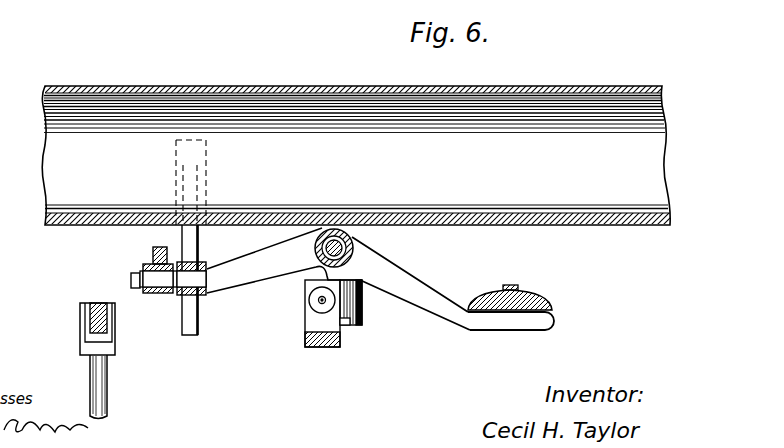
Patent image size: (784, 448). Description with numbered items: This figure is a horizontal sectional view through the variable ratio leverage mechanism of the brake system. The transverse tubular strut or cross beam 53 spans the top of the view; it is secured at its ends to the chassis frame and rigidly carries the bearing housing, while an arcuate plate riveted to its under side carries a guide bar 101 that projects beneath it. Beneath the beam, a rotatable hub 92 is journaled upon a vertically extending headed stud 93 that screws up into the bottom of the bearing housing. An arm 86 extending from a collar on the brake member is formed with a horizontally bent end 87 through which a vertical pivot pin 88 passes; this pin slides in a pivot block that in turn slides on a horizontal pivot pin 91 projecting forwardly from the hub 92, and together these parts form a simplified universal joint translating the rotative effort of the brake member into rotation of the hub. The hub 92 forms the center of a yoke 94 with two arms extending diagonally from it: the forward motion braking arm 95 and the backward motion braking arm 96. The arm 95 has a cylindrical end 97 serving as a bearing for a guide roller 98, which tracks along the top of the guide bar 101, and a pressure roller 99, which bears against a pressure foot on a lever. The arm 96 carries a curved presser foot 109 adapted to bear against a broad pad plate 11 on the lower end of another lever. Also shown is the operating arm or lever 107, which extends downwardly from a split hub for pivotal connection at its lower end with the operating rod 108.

The cam pad 11 is at (556, 311).
The tubular strut or cross beam 53 is at (64, 226).
The arm 86 is at (305, 343).
The horizontally bent end 87 is at (315, 322).
The vertical pivot pin 88 is at (308, 303).
The horizontal pivot pin 91 is at (349, 326).
The rotatable hub 92 is at (354, 248).
The headed stud 93 is at (336, 240).
The yoke 94 is at (277, 245).
The forward motion braking arm 95 is at (244, 274).
The backward motion braking arm 96 is at (410, 296).
The cylindrical end 97 is at (168, 290).
The guide roller 98 is at (199, 296).
The pressure roller 99 is at (150, 292).
The guide bar 101 is at (208, 168).
The operating arm or lever 107 is at (90, 320).
The operating rod 108 is at (92, 378).
The curved presser foot 109 is at (497, 321).